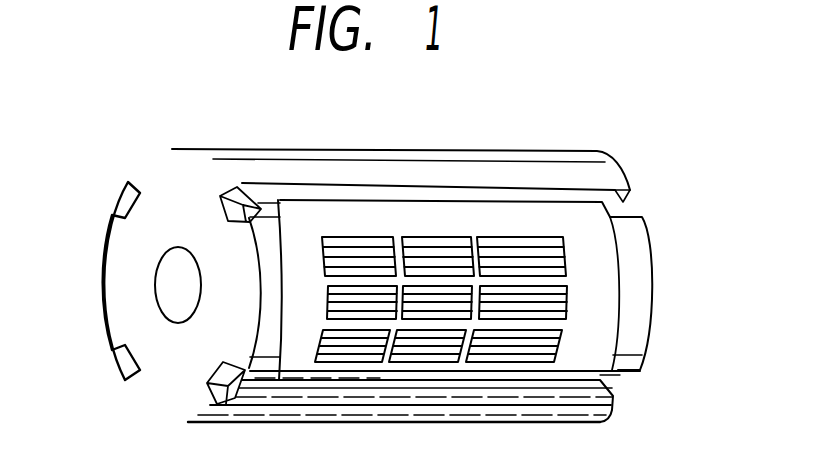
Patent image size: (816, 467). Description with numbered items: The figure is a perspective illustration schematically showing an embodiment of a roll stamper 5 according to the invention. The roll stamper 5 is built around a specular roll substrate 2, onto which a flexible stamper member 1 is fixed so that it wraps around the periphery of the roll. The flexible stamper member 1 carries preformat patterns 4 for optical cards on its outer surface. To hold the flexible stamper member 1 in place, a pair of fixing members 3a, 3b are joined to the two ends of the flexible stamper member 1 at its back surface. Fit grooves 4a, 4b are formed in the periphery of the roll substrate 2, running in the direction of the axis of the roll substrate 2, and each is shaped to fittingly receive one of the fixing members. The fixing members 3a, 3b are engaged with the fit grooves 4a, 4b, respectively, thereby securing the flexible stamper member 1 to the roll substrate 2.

The flexible stamper member 1 is at (587, 295).
The specular roll substrate 2 is at (160, 167).
The fixing member 3a is at (618, 398).
The fixing member 3b is at (575, 190).
The preformat patterns 4 is at (453, 237).
The fit groove 4a is at (206, 356).
The fit groove 4b is at (208, 218).
The roll stamper 5 is at (553, 138).